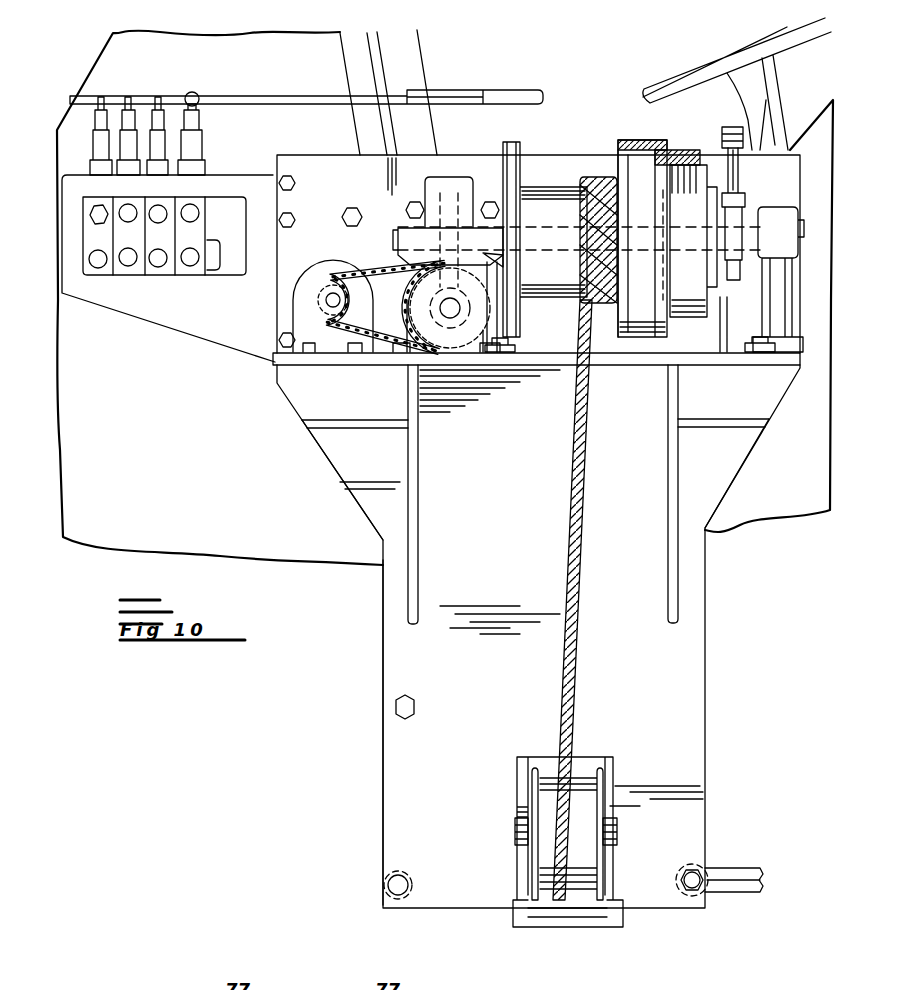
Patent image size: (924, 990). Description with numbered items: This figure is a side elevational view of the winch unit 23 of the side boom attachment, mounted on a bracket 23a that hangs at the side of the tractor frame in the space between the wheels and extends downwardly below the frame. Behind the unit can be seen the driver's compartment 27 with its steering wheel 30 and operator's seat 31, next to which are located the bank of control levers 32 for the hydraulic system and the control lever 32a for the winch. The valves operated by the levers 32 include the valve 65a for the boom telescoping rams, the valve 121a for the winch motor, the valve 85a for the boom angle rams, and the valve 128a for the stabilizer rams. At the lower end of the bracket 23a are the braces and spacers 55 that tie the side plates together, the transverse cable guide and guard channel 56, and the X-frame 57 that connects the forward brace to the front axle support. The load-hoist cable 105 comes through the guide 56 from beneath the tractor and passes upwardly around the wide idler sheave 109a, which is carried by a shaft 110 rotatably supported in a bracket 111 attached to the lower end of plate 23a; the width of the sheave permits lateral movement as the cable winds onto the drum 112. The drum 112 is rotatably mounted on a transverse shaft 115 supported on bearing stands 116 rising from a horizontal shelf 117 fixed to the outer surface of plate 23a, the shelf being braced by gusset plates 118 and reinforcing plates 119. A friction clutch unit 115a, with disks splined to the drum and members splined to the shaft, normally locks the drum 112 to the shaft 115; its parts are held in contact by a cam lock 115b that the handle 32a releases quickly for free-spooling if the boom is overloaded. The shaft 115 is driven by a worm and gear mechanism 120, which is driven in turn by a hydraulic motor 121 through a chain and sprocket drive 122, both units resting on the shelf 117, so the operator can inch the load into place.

The winch unit 23 is at (322, 165).
The bracket 23a is at (382, 803).
The driver's compartment 27 is at (562, 118).
The steering wheel 30 is at (735, 52).
The operator's seat 31 is at (423, 44).
The control levers 32 is at (476, 90).
The control lever 32a is at (722, 132).
The braces and spacers 55 is at (390, 876).
The cable guide and guard channel 56 is at (571, 913).
The X-frame 57 is at (735, 893).
The valve 65a is at (201, 262).
The valve 85a is at (133, 265).
The load-hoist cable 105 is at (580, 668).
The idler sheave 109a is at (545, 793).
The shaft 110 is at (515, 828).
The bracket 111 is at (520, 858).
The drum 112 is at (555, 292).
The shaft 115 is at (555, 228).
The friction clutch unit 115a is at (628, 178).
The cam lock 115b is at (742, 195).
The bearing stands 116 is at (500, 350).
The shelf 117 is at (787, 366).
The gusset plates 118 is at (420, 455).
The reinforcing plates 119 is at (317, 432).
The worm and gear mechanism 120 is at (440, 250).
The hydraulic motor 121 is at (297, 292).
The valve 121a is at (167, 262).
The chain and sprocket drive 122 is at (392, 272).
The valve 128a is at (92, 265).